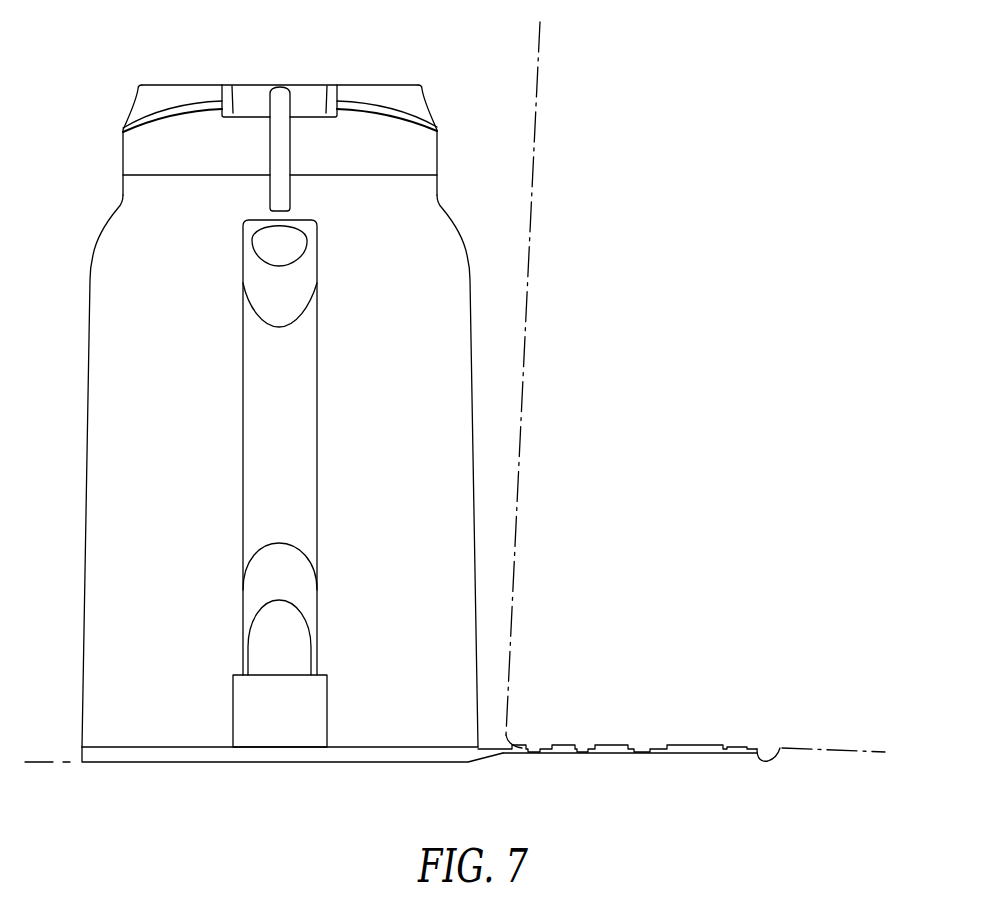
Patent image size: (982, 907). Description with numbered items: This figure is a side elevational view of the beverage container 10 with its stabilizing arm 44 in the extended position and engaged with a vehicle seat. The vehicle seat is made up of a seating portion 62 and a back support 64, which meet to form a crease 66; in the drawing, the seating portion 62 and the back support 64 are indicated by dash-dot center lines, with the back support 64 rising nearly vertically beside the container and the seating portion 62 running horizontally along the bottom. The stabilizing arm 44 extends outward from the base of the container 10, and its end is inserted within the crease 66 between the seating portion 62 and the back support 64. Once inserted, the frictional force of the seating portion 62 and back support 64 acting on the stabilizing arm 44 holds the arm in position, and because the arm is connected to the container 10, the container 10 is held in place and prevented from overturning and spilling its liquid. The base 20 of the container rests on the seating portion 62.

The container 10 is at (182, 74).
The base plate 20 is at (180, 764).
The stabilizing arm 44 is at (593, 746).
The seating portion 62 is at (52, 760).
The back support 64 is at (538, 41).
The crease 66 is at (780, 748).